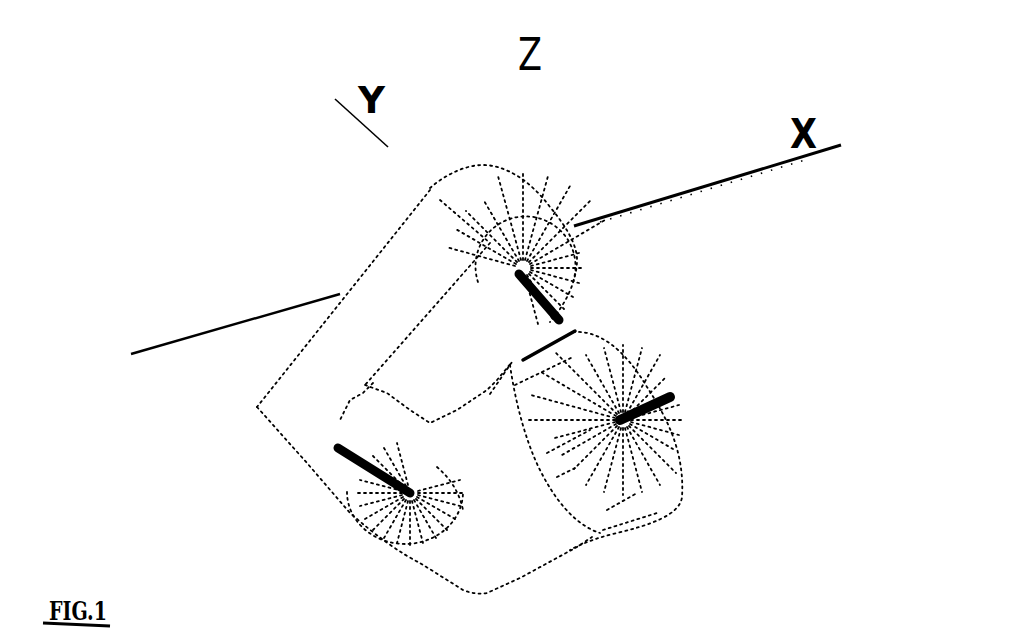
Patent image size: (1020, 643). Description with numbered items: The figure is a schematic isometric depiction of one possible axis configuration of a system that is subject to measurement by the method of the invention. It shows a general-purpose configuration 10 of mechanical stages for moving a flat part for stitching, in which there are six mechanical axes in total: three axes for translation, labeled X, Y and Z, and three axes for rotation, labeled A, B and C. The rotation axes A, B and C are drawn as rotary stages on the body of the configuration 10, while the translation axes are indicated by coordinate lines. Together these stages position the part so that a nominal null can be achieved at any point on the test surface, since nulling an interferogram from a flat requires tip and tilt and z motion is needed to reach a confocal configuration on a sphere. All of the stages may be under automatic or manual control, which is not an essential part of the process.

The general-purpose configuration 10 is at (667, 110).
The rotation axis A is at (672, 390).
The rotation axis B is at (430, 188).
The rotation axis C is at (530, 572).